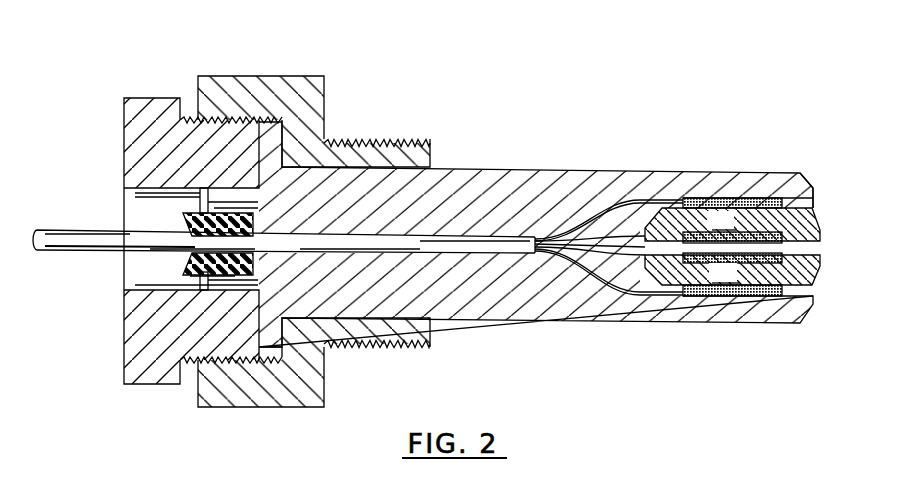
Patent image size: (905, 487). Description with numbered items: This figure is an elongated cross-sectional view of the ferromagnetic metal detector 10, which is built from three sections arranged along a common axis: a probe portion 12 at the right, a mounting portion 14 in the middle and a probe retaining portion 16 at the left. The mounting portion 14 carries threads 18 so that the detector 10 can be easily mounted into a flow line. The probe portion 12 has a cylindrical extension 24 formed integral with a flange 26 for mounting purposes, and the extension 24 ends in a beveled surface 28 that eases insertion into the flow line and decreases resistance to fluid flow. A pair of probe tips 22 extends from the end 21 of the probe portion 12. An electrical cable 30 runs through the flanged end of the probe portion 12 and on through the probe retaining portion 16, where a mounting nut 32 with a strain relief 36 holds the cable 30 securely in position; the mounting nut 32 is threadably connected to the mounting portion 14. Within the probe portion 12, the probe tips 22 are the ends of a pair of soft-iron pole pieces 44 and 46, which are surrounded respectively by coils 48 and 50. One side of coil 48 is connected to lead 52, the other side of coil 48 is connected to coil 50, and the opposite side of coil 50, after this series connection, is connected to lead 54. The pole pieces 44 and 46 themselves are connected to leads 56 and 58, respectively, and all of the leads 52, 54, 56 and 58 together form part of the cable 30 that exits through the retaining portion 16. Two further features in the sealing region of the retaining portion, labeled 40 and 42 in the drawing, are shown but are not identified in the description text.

The ferromagnetic metal detector 10 is at (673, 95).
The probe portion 12 is at (712, 153).
The mounting portion 14 is at (229, 70).
The probe retaining portion 16 is at (101, 173).
The threads 18 is at (405, 139).
The end 21 is at (815, 207).
The probe tips 22 is at (822, 256).
The cylindrical extension 24 is at (541, 168).
The flange 26 is at (283, 132).
The beveled surface 28 is at (806, 178).
The electrical cable 30 is at (463, 236).
The mounting nut 32 is at (152, 98).
The strain relief 36 is at (186, 263).
The upper seal ring 40 is at (197, 201).
The shoulder 42 is at (268, 320).
The soft-iron pole piece 44 is at (732, 225).
The soft-iron pole piece 46 is at (732, 269).
The coil 48 is at (753, 198).
The coil 50 is at (752, 298).
The lead 52 is at (645, 198).
The lead 54 is at (641, 297).
The lead 56 is at (598, 232).
The lead 58 is at (594, 261).